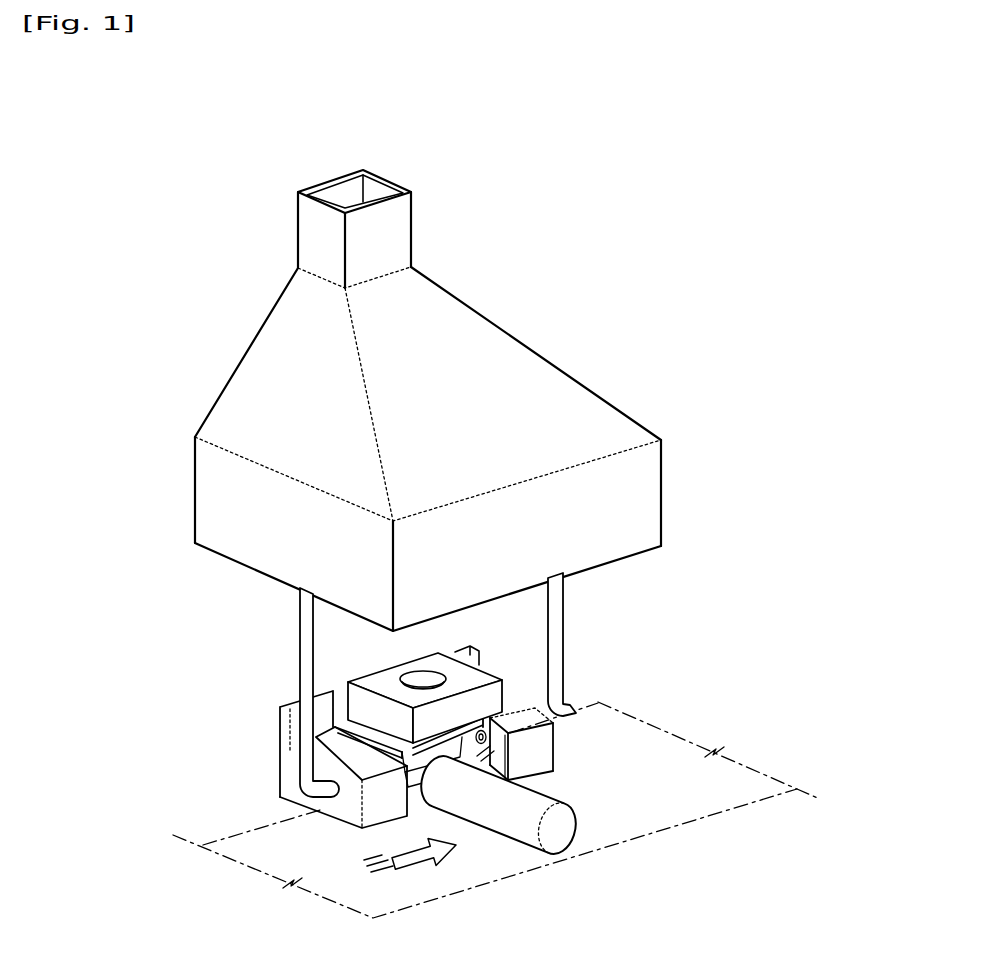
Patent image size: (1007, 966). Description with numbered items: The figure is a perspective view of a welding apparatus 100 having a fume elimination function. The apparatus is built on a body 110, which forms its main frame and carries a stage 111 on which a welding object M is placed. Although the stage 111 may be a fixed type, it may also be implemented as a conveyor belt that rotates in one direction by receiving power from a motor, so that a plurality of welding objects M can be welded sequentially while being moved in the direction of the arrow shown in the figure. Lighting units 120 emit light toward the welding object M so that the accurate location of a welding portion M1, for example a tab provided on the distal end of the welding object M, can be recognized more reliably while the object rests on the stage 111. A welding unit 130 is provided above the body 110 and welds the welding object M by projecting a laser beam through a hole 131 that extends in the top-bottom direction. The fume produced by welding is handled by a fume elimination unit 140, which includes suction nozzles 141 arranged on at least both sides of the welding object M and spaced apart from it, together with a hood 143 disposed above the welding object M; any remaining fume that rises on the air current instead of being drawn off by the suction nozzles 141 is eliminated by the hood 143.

The welding apparatus 100 is at (541, 288).
The hood 143 is at (563, 382).
The fume elimination unit 140 is at (301, 682).
The suction nozzle 141 is at (483, 732).
The welding unit 130 is at (363, 667).
The hole 131 is at (423, 673).
The welding portion M1 is at (430, 760).
The lighting unit 120 is at (513, 800).
The body 110 is at (285, 778).
The stage 111 is at (643, 833).
The welding object M is at (495, 813).